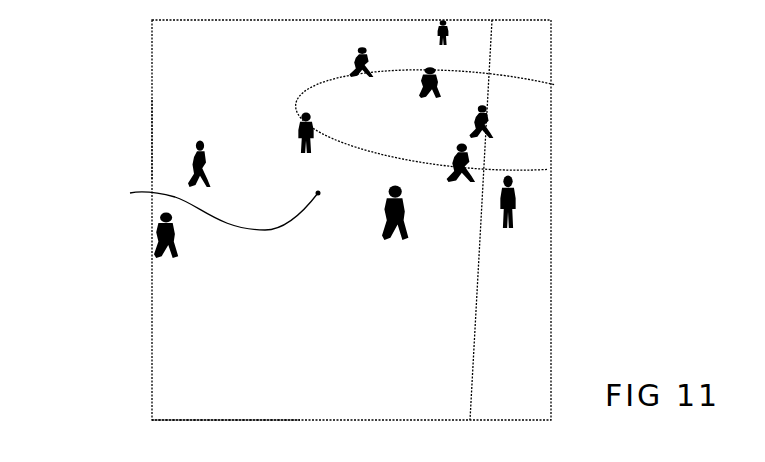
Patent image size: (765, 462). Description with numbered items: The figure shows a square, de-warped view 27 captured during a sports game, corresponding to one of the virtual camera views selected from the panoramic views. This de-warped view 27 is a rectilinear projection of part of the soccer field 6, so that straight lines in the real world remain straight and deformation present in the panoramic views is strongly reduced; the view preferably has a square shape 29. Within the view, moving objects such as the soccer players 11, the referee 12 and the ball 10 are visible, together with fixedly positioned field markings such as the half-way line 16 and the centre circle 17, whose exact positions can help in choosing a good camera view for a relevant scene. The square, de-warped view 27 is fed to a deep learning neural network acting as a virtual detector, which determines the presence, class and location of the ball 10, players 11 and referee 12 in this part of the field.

The soccer field 6 is at (162, 76).
The square, de-warped view 27 is at (152, 137).
The square shape 29 is at (152, 405).
The ball 10 is at (211, 208).
The centre circle 17 is at (525, 73).
The half-way line 16 is at (473, 330).
The soccer players 11 is at (543, 96).
The referee 12 is at (515, 198).